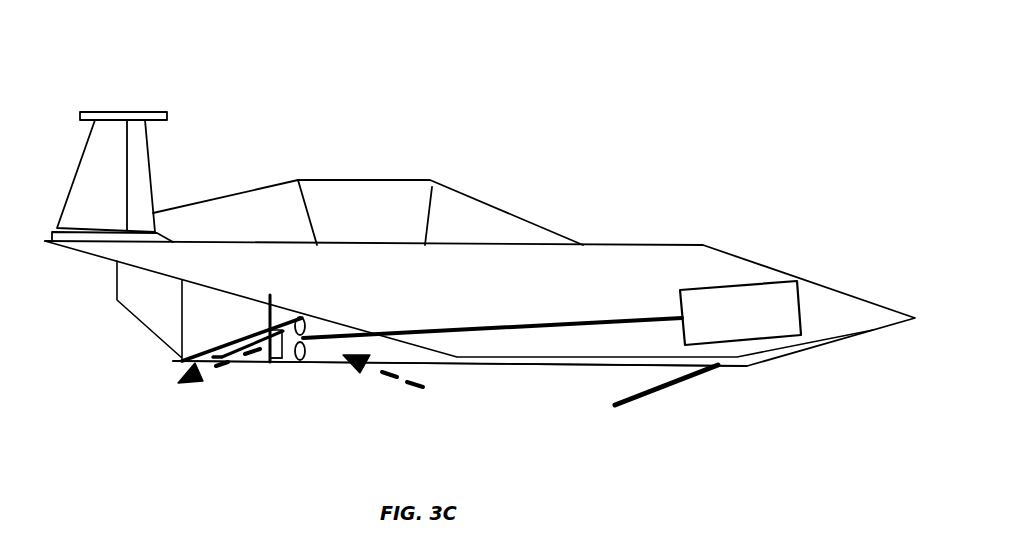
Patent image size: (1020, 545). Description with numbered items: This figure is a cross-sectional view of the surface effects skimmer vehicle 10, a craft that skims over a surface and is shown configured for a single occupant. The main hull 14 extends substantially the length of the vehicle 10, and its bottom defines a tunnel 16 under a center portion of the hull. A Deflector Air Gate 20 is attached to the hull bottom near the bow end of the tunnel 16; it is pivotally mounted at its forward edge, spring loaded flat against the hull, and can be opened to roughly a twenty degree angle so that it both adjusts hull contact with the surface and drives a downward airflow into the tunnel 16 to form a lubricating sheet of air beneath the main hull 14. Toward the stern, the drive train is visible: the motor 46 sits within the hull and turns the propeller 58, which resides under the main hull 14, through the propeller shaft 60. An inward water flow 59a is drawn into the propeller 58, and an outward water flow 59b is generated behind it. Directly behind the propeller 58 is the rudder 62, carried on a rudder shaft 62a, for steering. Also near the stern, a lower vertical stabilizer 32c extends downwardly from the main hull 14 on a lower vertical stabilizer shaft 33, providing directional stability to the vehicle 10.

The surface effects skimmer vehicle 10 is at (480, 232).
The main hull 14 is at (315, 285).
The tunnel 16 is at (448, 365).
The Deflector Air Gate 20 is at (678, 385).
The lower vertical stabilizer 32c is at (132, 293).
The lower vertical stabilizer shaft 33 is at (180, 318).
The motor 46 is at (728, 315).
The propeller 58 is at (307, 363).
The inward water flow 59a is at (382, 372).
The outward water flow 59b is at (220, 363).
The propeller shaft 60 is at (525, 329).
The rudder 62 is at (262, 358).
The rudder shaft 62a is at (275, 363).